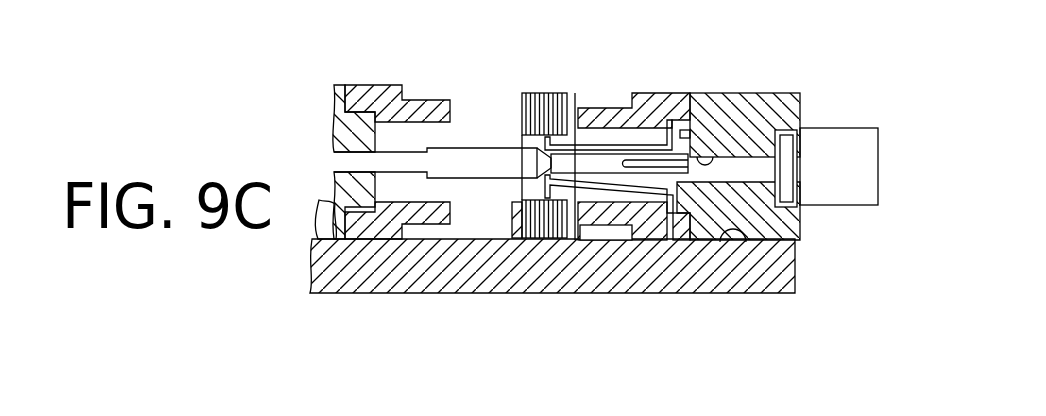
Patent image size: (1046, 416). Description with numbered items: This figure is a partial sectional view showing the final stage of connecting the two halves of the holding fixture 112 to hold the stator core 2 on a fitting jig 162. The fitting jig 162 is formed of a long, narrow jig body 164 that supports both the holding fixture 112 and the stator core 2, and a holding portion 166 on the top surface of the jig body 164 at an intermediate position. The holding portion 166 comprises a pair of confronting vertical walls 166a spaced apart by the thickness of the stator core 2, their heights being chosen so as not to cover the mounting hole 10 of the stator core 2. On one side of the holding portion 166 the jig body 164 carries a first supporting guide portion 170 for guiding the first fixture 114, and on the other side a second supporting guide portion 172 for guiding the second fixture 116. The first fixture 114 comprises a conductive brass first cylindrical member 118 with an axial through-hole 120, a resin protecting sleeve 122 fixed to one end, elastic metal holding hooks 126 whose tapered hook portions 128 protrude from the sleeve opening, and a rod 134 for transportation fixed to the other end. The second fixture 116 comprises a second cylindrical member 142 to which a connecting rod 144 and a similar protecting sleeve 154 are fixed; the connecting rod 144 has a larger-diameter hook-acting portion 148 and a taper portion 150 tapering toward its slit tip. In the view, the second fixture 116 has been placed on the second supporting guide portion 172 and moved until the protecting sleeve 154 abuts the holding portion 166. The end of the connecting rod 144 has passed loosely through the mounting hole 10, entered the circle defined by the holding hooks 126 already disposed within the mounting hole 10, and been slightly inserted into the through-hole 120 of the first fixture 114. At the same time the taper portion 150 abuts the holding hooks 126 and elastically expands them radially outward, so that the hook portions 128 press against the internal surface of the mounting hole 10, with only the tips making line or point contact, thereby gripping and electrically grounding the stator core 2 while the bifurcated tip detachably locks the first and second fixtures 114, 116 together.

The stator core 2 is at (546, 90).
The mounting hole 10 is at (514, 135).
The holding fixture 112 is at (650, 90).
The first fixture 114 is at (706, 91).
The second fixture 116 is at (343, 83).
The first cylindrical member 118 is at (790, 94).
The through-hole 120 is at (710, 158).
The protecting sleeve 122 is at (672, 100).
The holding hooks 126 is at (603, 128).
The hook portions 128 is at (558, 145).
The rod for transportation 134 is at (845, 140).
The second cylindrical member 142 is at (350, 123).
The connecting rod 144 is at (406, 146).
The hook-acting portion 148 is at (480, 158).
The taper portion 150 is at (540, 167).
The protecting sleeve 154 is at (378, 86).
The fitting jig 162 is at (425, 296).
The jig body 164 is at (575, 240).
The holding portion 166 is at (575, 215).
The vertical walls 166a is at (518, 238).
The first supporting guide portion 170 is at (742, 243).
The second supporting guide portion 172 is at (316, 200).